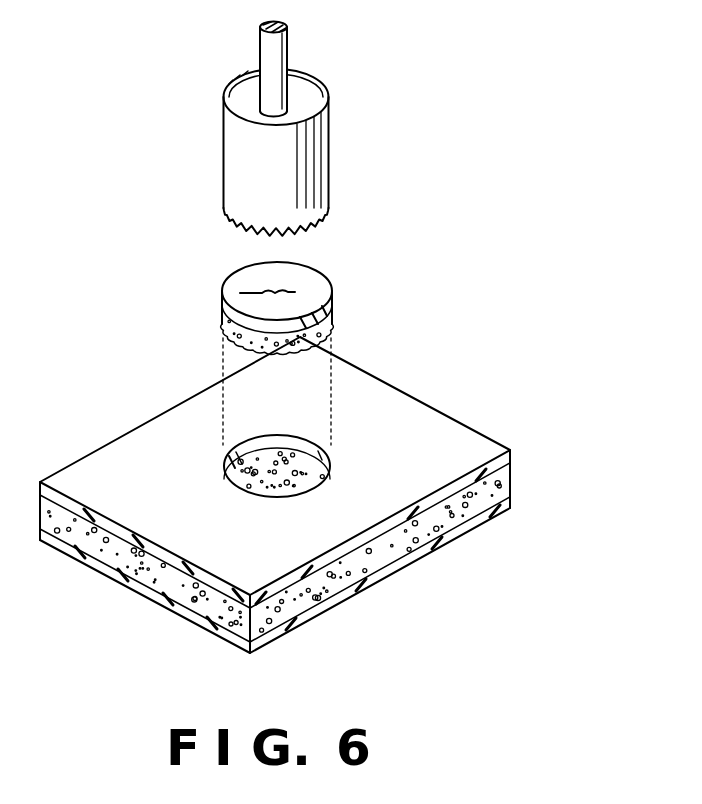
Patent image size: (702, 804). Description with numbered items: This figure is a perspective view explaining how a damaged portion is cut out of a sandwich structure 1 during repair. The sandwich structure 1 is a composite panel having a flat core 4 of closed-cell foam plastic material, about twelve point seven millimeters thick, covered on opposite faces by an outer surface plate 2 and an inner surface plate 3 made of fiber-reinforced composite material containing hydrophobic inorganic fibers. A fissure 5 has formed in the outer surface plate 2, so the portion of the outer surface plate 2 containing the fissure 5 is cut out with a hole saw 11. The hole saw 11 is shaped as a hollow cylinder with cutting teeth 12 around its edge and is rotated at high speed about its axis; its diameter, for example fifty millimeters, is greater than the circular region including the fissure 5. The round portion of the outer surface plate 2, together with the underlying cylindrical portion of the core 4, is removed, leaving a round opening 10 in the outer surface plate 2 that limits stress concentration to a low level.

The sandwich structure 1 is at (315, 495).
The outer surface plate 2 is at (515, 452).
The inner surface plate 3 is at (512, 506).
The core 4 is at (515, 482).
The fissure 5 is at (258, 294).
The round opening 10 is at (331, 449).
The hole saw 11 is at (330, 143).
The cutting teeth 12 is at (312, 226).